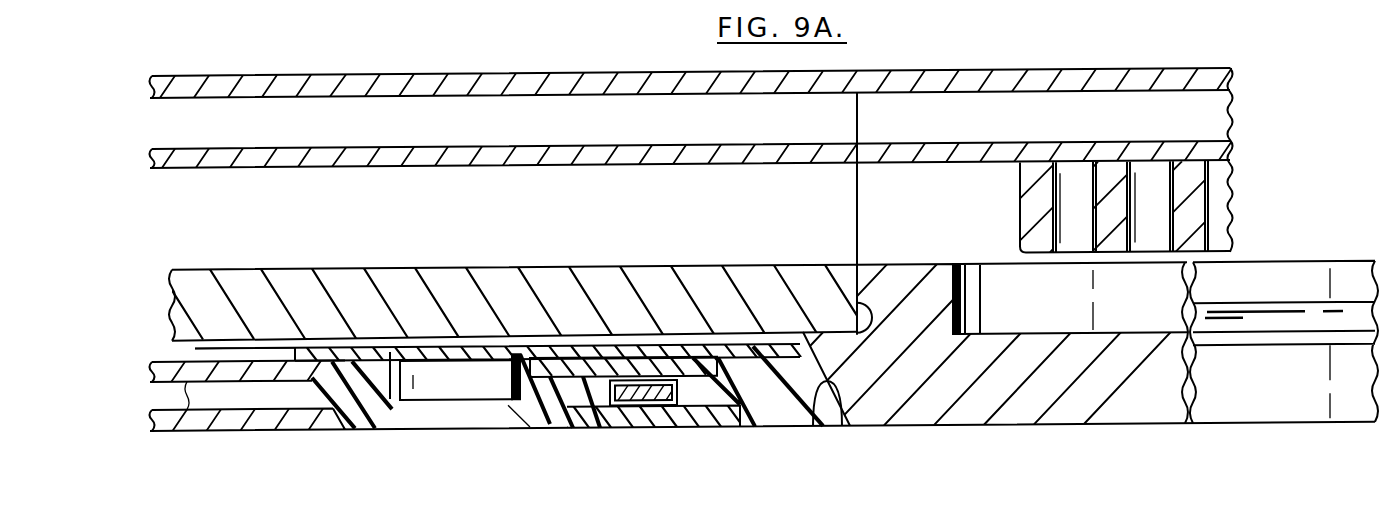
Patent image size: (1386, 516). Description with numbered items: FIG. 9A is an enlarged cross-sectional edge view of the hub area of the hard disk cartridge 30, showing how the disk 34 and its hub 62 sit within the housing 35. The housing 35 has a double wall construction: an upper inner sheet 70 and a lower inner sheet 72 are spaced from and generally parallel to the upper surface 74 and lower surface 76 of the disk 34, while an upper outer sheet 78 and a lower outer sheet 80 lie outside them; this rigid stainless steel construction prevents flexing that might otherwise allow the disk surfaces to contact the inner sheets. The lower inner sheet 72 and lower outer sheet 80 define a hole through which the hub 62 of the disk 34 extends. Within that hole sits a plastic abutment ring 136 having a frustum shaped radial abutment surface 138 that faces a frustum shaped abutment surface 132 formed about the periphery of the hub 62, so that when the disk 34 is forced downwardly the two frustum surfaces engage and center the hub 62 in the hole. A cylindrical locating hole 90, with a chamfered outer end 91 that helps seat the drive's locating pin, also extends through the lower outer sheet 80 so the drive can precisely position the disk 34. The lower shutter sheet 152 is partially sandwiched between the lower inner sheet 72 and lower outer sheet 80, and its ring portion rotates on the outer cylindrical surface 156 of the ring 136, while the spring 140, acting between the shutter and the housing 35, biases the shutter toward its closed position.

The hard disk cartridge 30 is at (1232, 117).
The disk 34 is at (640, 271).
The housing 35 is at (865, 194).
The hub 62 is at (1015, 423).
The upper inner sheet 70 is at (320, 160).
The lower inner sheet 72 is at (273, 379).
The upper surface of the disk 74 is at (515, 276).
The lower surface of the disk 76 is at (195, 346).
The upper outer sheet 78 is at (394, 78).
The lower outer sheet 80 is at (172, 434).
The cylindrical locating hole 90 is at (480, 390).
The chamfered outer end 91 is at (417, 425).
The frustum shaped abutment surface 132 is at (790, 413).
The plastic abutment ring 136 is at (750, 434).
The frustum shaped radial abutment surface 138 is at (840, 413).
The spring 140 is at (1195, 212).
The lower shutter sheet 152 is at (632, 415).
The outer cylindrical surface 156 is at (653, 417).